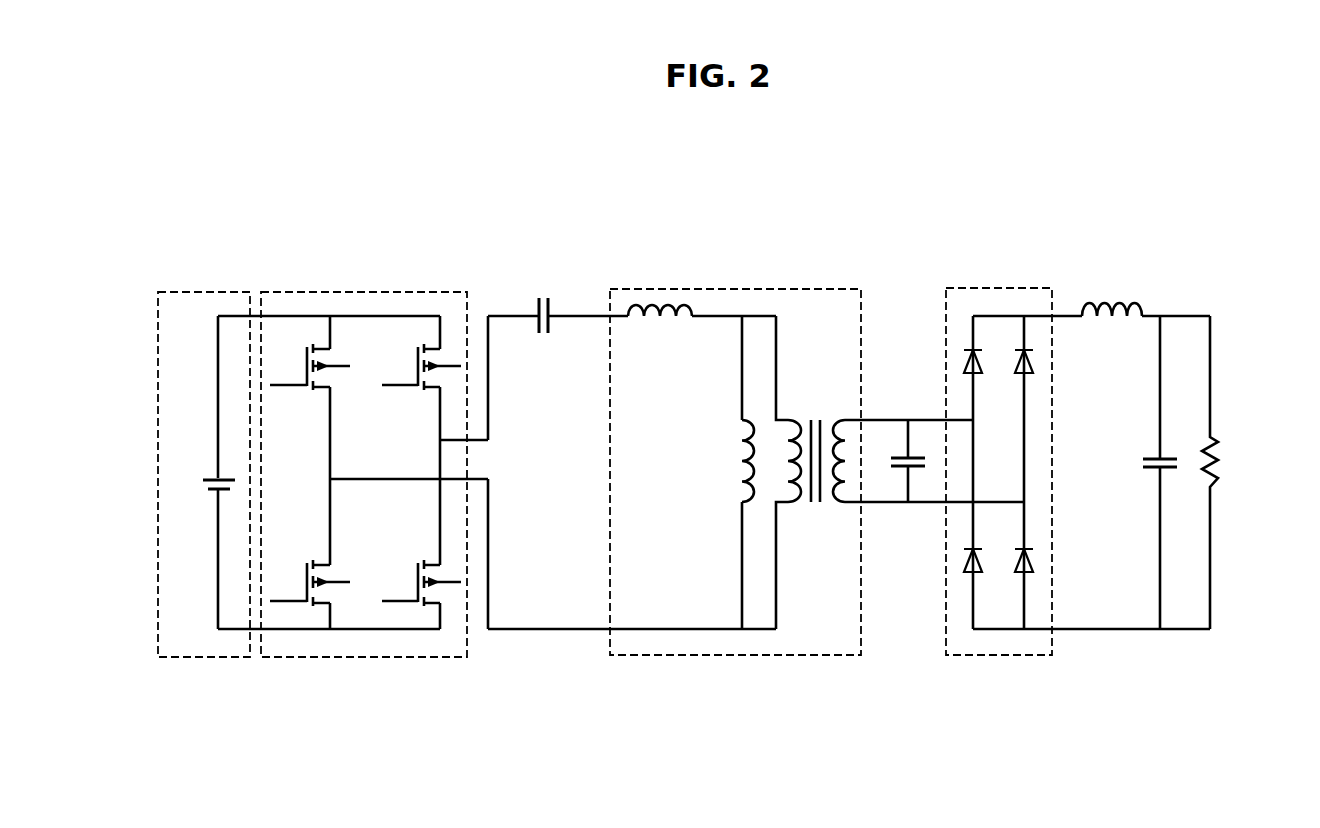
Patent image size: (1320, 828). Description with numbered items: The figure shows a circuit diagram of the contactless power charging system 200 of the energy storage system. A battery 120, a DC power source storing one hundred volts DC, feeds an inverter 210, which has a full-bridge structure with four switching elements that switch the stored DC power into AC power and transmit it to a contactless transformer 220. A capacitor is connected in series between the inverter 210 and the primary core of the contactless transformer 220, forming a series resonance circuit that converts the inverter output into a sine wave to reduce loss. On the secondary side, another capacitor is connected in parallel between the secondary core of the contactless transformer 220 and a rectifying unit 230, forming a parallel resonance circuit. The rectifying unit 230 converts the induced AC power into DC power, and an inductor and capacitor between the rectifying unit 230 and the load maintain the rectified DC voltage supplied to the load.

The contactless power charging system 200 is at (1160, 236).
The battery 120 is at (209, 291).
The inverter 210 is at (360, 291).
The contactless transformer 220 is at (757, 288).
The rectifying unit 230 is at (1005, 287).